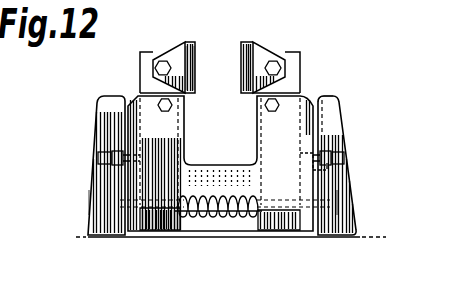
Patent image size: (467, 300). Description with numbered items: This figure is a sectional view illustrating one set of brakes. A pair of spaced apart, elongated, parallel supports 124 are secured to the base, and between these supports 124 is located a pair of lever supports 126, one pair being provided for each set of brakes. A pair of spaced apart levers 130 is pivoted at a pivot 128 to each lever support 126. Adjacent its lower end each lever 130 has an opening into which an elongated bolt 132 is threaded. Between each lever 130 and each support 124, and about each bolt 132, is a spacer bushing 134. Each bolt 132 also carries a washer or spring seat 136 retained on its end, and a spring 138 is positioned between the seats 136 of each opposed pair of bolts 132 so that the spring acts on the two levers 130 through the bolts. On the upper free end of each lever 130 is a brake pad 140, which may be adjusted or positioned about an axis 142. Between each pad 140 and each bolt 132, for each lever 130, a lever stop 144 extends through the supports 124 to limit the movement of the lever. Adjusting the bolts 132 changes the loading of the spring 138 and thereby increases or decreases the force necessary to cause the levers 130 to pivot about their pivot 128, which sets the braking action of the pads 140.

The support 124 is at (112, 236).
The lever support 126 is at (306, 98).
The pivot 128 is at (265, 105).
The lever 130 is at (140, 52).
The bolt 132 is at (89, 203).
The spacer bushing 134 is at (133, 234).
The spring seat 136 is at (183, 216).
The spring 138 is at (208, 218).
The brake pad 140 is at (196, 55).
The axis 142 is at (163, 60).
The lever stop 144 is at (103, 157).